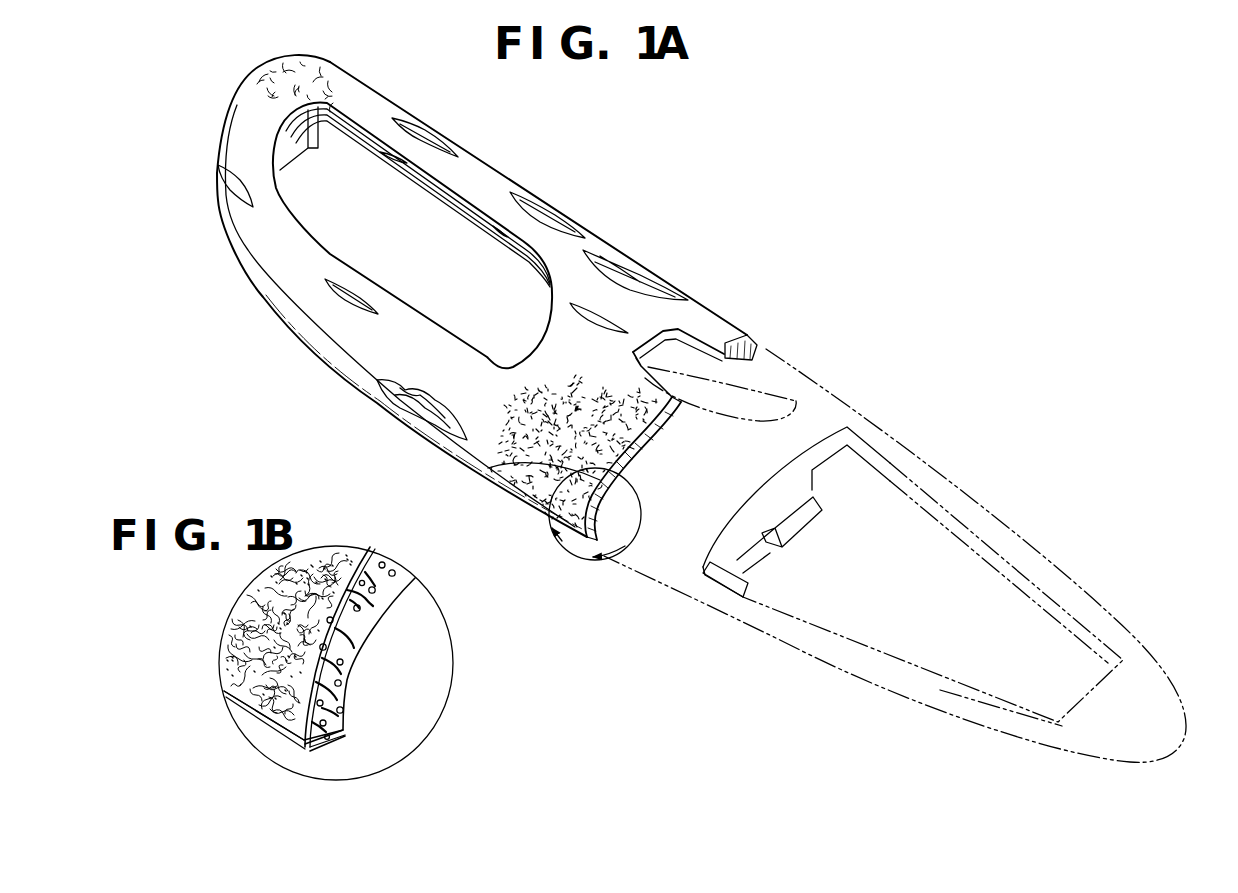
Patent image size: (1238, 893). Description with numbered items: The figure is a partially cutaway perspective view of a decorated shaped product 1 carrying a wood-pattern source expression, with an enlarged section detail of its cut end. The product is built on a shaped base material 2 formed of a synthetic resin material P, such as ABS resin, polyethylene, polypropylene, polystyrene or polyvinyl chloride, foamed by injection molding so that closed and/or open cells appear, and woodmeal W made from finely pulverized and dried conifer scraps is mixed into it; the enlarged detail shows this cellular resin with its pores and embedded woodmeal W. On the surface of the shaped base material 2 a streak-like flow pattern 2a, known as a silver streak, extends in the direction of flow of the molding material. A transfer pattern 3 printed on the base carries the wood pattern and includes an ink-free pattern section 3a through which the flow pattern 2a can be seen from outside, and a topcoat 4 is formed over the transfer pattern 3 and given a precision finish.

In FIG. 1A, the decorated shaped product 1 is at (856, 186).
In FIG. 1A, the shaped base material 2 is at (643, 437).
In FIG. 1B, the shaped base material 2 is at (343, 630).
In FIG. 1A, the streak-like flow pattern 2a is at (637, 270).
In FIG. 1A, the transfer pattern 3 is at (328, 337).
In FIG. 1B, the transfer pattern 3 is at (230, 647).
In FIG. 1A, the ink-free pattern section 3a is at (440, 412).
In FIG. 1B, the topcoat 4 is at (247, 713).
In FIG. 1B, the woodmeal W is at (393, 573).
In FIG. 1B, the synthetic resin material P is at (347, 593).